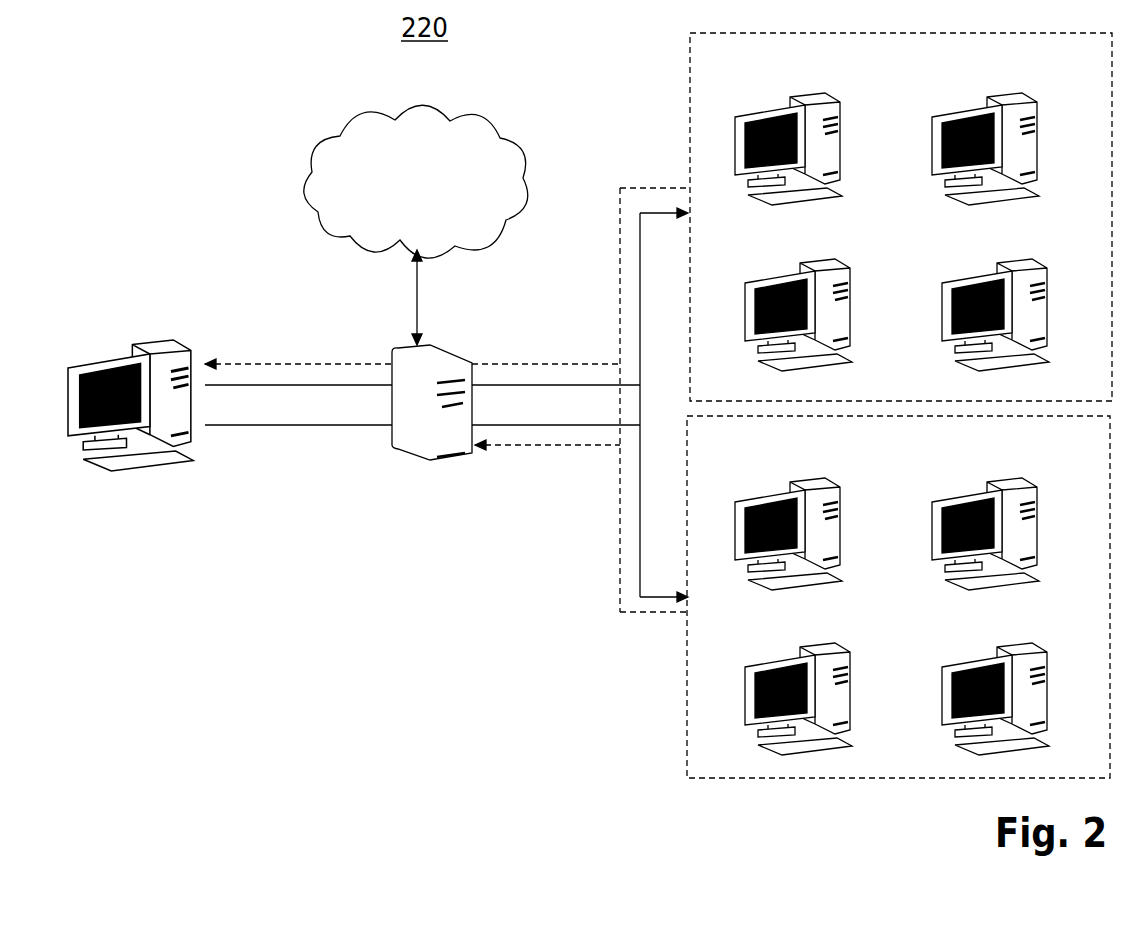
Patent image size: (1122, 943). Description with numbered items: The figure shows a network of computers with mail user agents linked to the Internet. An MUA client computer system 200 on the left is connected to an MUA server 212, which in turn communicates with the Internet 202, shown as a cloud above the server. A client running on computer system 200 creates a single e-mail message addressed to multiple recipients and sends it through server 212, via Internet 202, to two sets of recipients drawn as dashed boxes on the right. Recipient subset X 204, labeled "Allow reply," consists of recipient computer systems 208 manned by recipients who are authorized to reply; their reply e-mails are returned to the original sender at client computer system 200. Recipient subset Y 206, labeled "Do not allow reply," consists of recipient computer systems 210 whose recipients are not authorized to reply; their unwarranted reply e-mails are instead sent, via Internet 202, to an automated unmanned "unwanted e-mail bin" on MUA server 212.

The client computer system 200 is at (160, 338).
The Internet 202 is at (330, 145).
The recipient subset X 204 is at (699, 100).
The recipient subset Y 206 is at (697, 710).
The recipient computer system 208 is at (928, 237).
The recipient computer system 210 is at (921, 617).
The MUA server 212 is at (400, 448).